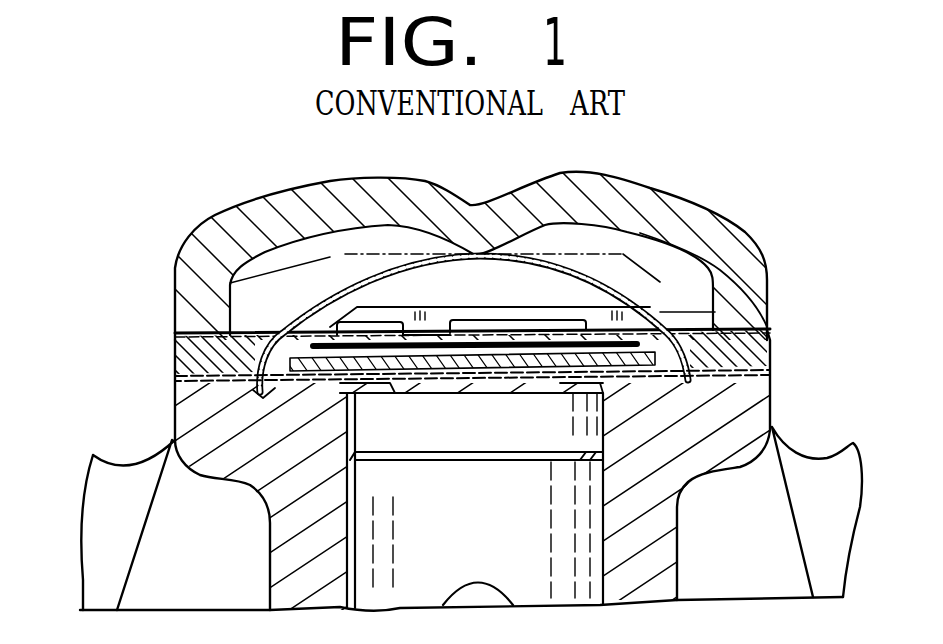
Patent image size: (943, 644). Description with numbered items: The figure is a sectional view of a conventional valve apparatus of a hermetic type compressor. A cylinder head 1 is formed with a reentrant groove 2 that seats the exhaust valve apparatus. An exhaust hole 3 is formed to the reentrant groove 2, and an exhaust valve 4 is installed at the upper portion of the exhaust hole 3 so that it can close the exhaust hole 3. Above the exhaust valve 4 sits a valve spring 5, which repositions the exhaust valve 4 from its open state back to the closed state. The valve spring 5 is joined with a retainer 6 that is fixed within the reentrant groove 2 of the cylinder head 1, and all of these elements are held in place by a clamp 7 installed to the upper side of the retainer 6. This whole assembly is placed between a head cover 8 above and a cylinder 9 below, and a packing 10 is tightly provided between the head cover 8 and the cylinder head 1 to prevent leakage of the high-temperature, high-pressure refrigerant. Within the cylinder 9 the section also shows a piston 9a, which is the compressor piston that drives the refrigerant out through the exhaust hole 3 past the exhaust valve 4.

The cylinder head 1 is at (320, 348).
The reentrant groove 2 is at (340, 338).
The exhaust hole 3 is at (343, 400).
The exhaust valve 4 is at (470, 352).
The valve spring 5 is at (345, 300).
The retainer 6 is at (715, 312).
The clamp 7 is at (585, 297).
The head cover 8 is at (640, 187).
The cylinder 9 is at (740, 397).
The piston 9a is at (587, 537).
The packing 10 is at (767, 330).